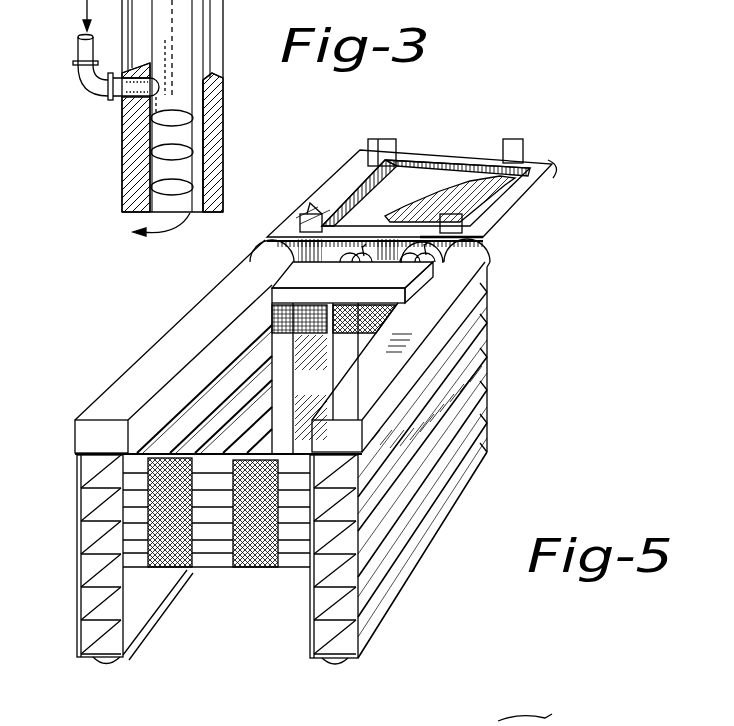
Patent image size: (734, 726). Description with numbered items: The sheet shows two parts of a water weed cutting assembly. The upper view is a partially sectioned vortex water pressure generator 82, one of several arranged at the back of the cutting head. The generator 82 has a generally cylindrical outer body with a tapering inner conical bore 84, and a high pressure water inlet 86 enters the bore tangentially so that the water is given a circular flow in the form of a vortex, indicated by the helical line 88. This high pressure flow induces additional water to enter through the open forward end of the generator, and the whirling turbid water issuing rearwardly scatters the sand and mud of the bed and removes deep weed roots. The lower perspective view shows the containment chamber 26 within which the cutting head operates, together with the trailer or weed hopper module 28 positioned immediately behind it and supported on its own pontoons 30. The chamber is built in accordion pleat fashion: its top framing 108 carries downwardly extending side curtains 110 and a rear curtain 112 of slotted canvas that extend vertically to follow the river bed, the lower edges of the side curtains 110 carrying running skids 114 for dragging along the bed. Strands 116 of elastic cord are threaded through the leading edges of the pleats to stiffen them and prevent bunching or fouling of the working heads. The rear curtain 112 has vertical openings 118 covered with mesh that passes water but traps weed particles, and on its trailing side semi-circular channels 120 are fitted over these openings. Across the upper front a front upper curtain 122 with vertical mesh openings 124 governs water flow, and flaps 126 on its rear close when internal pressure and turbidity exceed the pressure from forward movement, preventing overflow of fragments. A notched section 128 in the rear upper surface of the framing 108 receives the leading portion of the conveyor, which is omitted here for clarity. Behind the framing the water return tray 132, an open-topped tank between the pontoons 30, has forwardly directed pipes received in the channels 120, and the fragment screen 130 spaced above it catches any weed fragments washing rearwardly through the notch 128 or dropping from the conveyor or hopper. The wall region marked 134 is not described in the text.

In FIG. 5, the containment chamber 26 is at (496, 377).
In FIG. 5, the weed hopper module 28 is at (461, 145).
In FIG. 5, the pontoons 30 is at (546, 186).
In FIG. 3, the vortex water pressure generator 82 is at (213, 15).
In FIG. 3, the tapering inner conical bore 84 is at (203, 118).
In FIG. 3, the high pressure water inlet 86 is at (83, 91).
In FIG. 3, the helical line 88 is at (153, 182).
In FIG. 5, the top framing 108 is at (100, 404).
In FIG. 5, the side curtains 110 is at (440, 415).
In FIG. 5, the rear curtain 112 is at (397, 340).
In FIG. 5, the running skids 114 is at (95, 665).
In FIG. 5, the strands of elastic cord 116 is at (92, 638).
In FIG. 5, the vertical openings 118 is at (270, 322).
In FIG. 5, the semi-circular channels 120 is at (265, 252).
In FIG. 5, the front upper curtain 122 is at (290, 570).
In FIG. 5, the vertical mesh openings 124 is at (217, 570).
In FIG. 5, the flaps 126 is at (258, 438).
In FIG. 5, the notched section 128 is at (437, 231).
In FIG. 5, the fragment screen 130 is at (423, 205).
In FIG. 5, the water return tray 132 is at (400, 172).
In FIG. 5, the tray side wall 134 is at (350, 235).